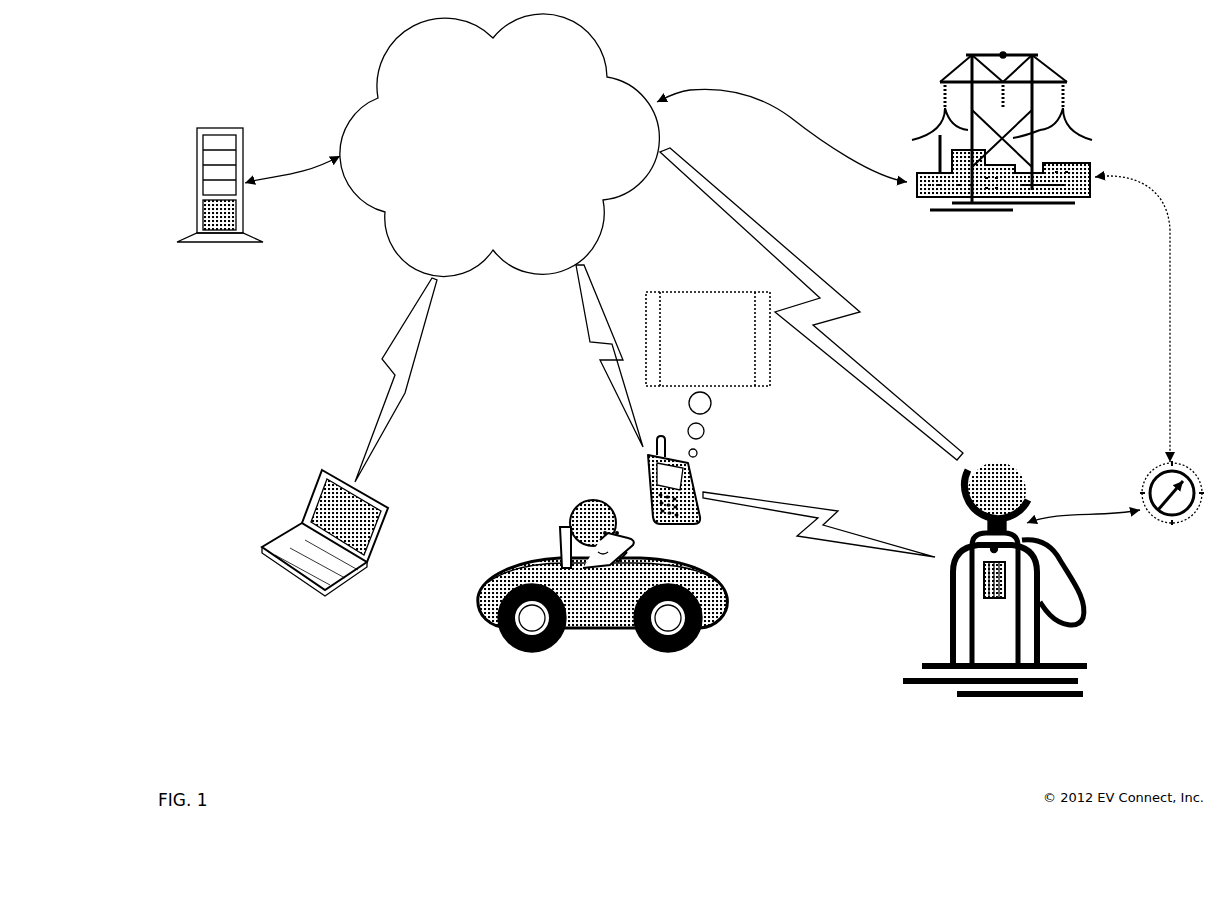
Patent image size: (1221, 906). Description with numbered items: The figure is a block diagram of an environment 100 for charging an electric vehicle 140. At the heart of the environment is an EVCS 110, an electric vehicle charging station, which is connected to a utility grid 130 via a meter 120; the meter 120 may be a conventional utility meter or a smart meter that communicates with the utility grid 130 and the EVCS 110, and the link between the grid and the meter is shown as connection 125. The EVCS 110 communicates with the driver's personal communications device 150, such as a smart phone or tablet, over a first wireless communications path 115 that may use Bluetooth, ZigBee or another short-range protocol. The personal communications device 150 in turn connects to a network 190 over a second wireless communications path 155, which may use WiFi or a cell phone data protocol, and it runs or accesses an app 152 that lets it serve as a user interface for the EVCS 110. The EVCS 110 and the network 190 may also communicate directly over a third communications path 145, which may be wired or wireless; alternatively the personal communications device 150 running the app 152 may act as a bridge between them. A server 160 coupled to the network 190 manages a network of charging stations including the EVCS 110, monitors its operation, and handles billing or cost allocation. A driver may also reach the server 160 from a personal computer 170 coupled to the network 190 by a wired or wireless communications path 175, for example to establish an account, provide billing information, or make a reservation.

The environment 100 is at (230, 62).
The EVCS 110 is at (945, 615).
The first wireless communications path 115 is at (805, 505).
The meter 120 is at (1148, 470).
The power line from utility to meter 125 is at (1168, 325).
The utility grid 130 is at (1015, 210).
The electric vehicle 140 is at (485, 625).
The third communications path 145 is at (885, 390).
The personal communications device 150 is at (648, 483).
The app 152 is at (708, 374).
The second wireless communications path 155 is at (592, 362).
The server 160 is at (218, 242).
The personal computer 170 is at (308, 494).
The communications path 175 is at (382, 365).
The network 190 is at (500, 145).